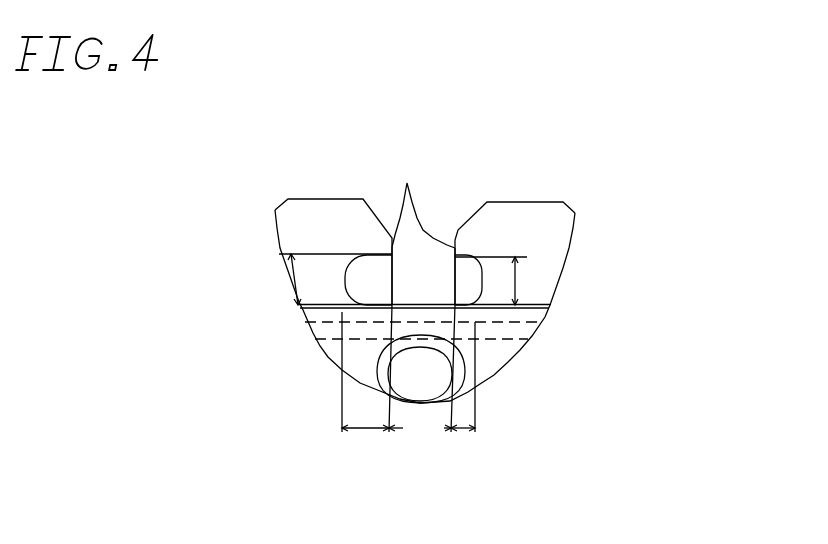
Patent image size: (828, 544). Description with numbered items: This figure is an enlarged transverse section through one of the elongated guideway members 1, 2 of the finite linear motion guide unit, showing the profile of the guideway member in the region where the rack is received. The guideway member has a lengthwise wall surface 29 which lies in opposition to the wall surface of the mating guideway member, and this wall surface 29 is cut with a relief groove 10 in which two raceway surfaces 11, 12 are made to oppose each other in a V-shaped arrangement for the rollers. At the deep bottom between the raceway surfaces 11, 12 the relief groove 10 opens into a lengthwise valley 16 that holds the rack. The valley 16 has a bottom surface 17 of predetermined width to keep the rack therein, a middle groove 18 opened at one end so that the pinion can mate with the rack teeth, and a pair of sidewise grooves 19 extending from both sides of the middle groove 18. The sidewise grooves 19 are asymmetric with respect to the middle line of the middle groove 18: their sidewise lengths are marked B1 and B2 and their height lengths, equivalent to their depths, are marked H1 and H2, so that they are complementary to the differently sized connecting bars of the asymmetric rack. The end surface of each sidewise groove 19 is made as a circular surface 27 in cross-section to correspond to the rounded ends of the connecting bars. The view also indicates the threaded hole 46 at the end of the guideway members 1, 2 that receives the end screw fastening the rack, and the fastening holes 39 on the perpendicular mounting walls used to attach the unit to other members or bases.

The guideway member 1 is at (475, 271).
The guideway member 2 is at (588, 228).
The relief groove 10 is at (420, 202).
The raceway surface 11 is at (411, 212).
The raceway surface 12 is at (375, 208).
The valley 16 is at (431, 290).
The bottom surface 17 is at (377, 298).
The middle groove 18 is at (406, 181).
The sidewise groove 19 is at (422, 288).
The circular surface 27 is at (345, 280).
The wall surface 29 is at (398, 207).
The fastening hole 39 is at (494, 335).
The threaded hole 46 is at (421, 383).
The height length of sidewise groove H1 is at (289, 281).
The height length of sidewise groove H2 is at (520, 273).
The sidewise length of groove B1 is at (372, 430).
The sidewise length of groove B2 is at (470, 432).